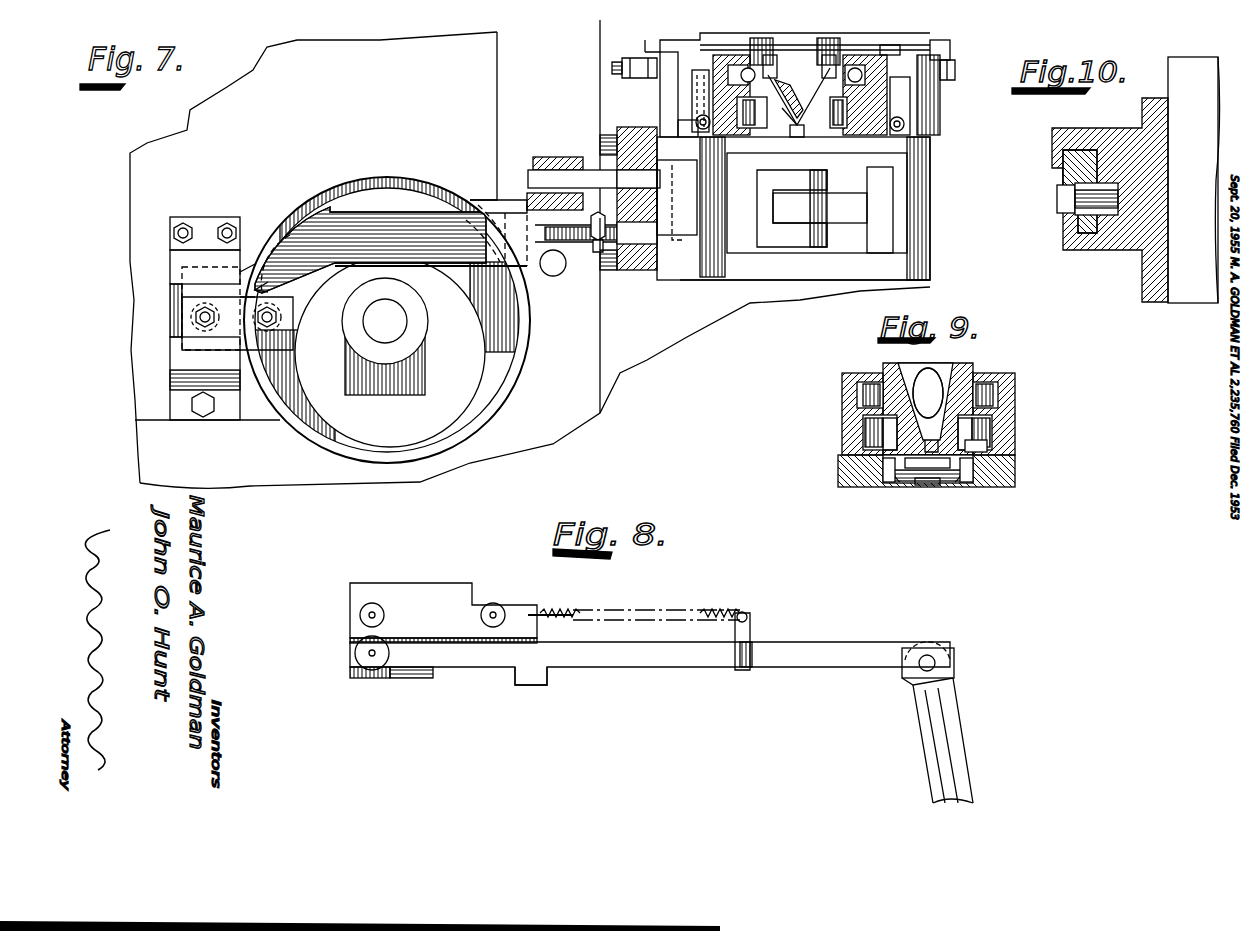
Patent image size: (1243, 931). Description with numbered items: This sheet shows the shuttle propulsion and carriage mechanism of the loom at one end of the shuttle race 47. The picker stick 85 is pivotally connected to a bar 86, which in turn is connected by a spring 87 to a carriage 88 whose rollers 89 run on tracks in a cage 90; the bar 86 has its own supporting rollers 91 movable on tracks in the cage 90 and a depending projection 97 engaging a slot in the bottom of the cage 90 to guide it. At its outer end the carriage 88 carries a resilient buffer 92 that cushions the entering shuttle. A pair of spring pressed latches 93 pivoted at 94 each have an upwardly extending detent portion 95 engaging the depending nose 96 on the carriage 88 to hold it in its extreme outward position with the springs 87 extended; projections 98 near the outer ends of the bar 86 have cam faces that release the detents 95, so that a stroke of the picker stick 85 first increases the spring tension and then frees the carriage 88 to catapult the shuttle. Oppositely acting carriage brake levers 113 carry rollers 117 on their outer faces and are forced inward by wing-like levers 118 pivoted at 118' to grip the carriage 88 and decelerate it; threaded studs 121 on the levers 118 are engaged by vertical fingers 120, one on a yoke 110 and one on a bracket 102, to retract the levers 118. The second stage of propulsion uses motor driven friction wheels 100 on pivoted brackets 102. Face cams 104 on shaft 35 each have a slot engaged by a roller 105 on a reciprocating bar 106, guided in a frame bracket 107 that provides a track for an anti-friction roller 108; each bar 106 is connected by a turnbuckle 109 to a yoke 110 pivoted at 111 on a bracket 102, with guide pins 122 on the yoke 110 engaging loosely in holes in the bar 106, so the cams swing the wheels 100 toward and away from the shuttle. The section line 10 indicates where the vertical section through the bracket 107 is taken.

In FIG. 7, the section line 10— 10 is at (205, 460).
In FIG. 7, the shaft 35 is at (398, 325).
In FIG. 7, the shuttle race 47 is at (790, 108).
In FIG. 8, the picker stick 85 is at (955, 728).
In FIG. 7, the bar 86 is at (737, 115).
In FIG. 9, the bar 86 is at (868, 447).
In FIG. 8, the bar 86 is at (800, 665).
In FIG. 7, the spring 87 is at (830, 85).
In FIG. 8, the spring 87 is at (738, 612).
In FIG. 9, the carriage 88 is at (900, 363).
In FIG. 8, the carriage 88 is at (438, 583).
In FIG. 9, the rollers 89 is at (865, 392).
In FIG. 8, the rollers 89 is at (480, 615).
In FIG. 7, the cage 90 is at (885, 50).
In FIG. 9, the cage 90 is at (985, 440).
In FIG. 9, the supporting rollers 91 is at (868, 430).
In FIG. 8, the supporting rollers 91 is at (372, 655).
In FIG. 9, the resilient buffer 92 is at (940, 375).
In FIG. 9, the spring pressed latches 93 is at (905, 485).
In FIG. 9, the latch pivot 94 is at (935, 472).
In FIG. 9, the detent portion 95 is at (905, 490).
In FIG. 9, the depending nose 96 is at (920, 487).
In FIG. 8, the depending nose 96 is at (430, 680).
In FIG. 8, the depending projection 97 is at (535, 688).
In FIG. 9, the projections 98 is at (885, 485).
In FIG. 8, the projections 98 is at (378, 680).
In FIG. 7, the friction wheels 100 is at (640, 52).
In FIG. 7, the bracket 102 is at (745, 235).
In FIG. 7, the face cams 104 is at (342, 438).
In FIG. 7, the roller 105 is at (282, 252).
In FIG. 7, the reciprocating bar 106 is at (405, 195).
In FIG. 10, the reciprocating bar 106 is at (1075, 228).
In FIG. 7, the bracket 107 is at (175, 385).
In FIG. 10, the bracket 107 is at (1130, 245).
In FIG. 7, the anti-friction roller 108 is at (178, 312).
In FIG. 10, the anti-friction roller 108 is at (1105, 210).
In FIG. 7, the turnbuckle 109 is at (596, 262).
In FIG. 7, the yoke 110 is at (648, 270).
In FIG. 7, the pivot 111 is at (688, 240).
In FIG. 7, the carriage brake levers 113 is at (770, 55).
In FIG. 7, the rollers 117 is at (748, 60).
In FIG. 7, the wing-like levers 118 is at (816, 75).
In FIG. 7, the lever pivot 118' is at (794, 123).
In FIG. 7, the vertical fingers 120 is at (665, 85).
In FIG. 7, the threaded studs 121 is at (618, 67).
In FIG. 7, the guide pins 122 is at (528, 178).